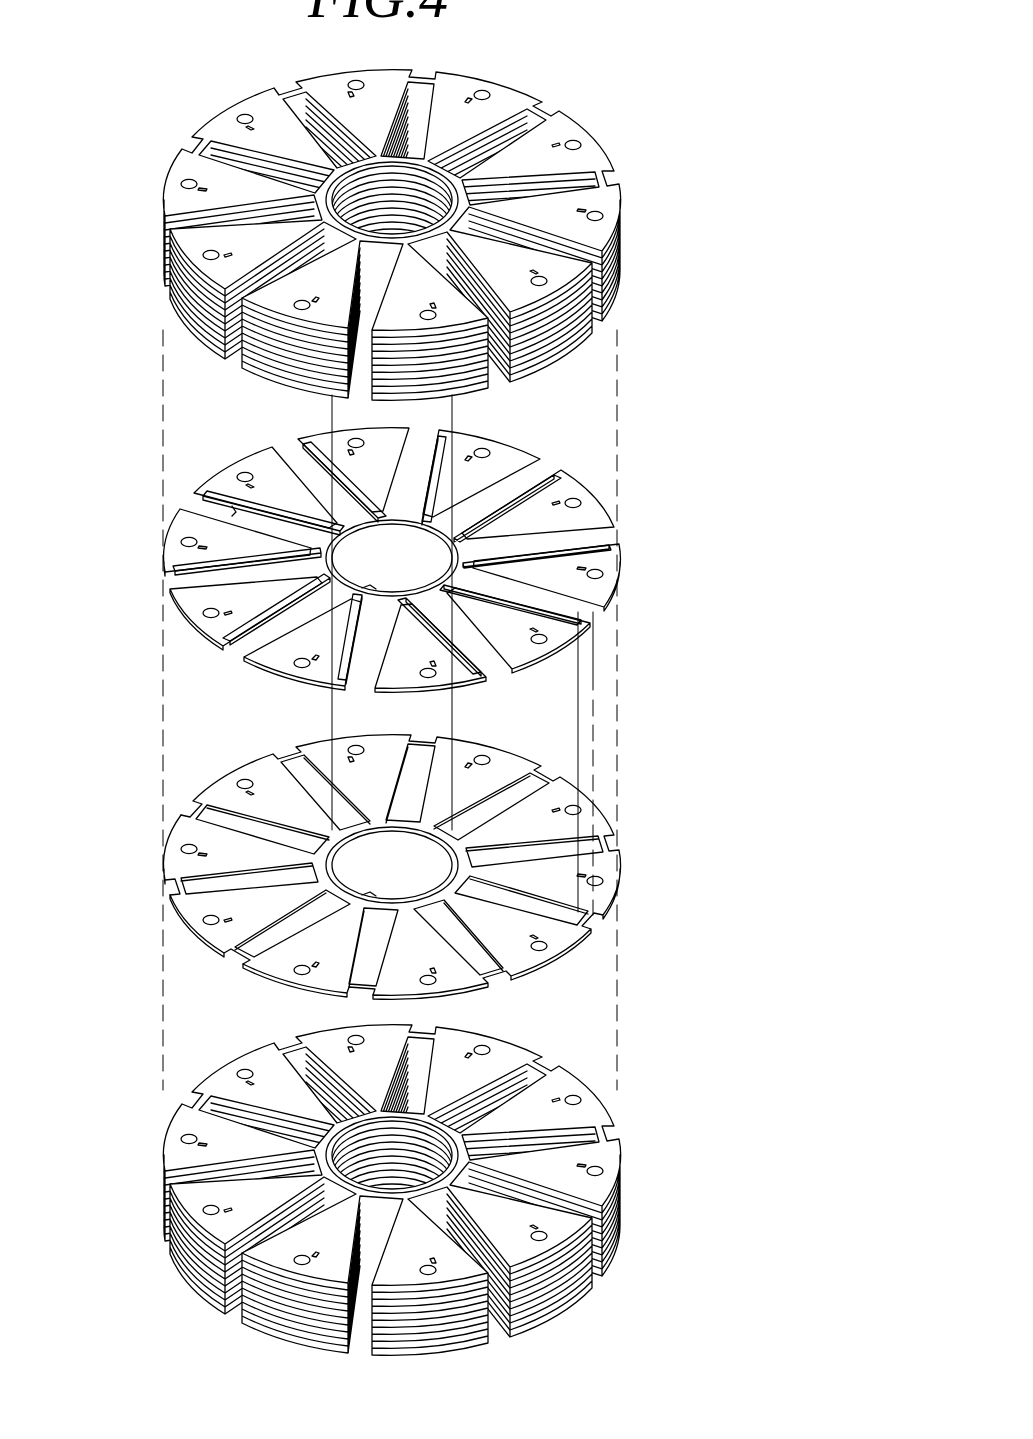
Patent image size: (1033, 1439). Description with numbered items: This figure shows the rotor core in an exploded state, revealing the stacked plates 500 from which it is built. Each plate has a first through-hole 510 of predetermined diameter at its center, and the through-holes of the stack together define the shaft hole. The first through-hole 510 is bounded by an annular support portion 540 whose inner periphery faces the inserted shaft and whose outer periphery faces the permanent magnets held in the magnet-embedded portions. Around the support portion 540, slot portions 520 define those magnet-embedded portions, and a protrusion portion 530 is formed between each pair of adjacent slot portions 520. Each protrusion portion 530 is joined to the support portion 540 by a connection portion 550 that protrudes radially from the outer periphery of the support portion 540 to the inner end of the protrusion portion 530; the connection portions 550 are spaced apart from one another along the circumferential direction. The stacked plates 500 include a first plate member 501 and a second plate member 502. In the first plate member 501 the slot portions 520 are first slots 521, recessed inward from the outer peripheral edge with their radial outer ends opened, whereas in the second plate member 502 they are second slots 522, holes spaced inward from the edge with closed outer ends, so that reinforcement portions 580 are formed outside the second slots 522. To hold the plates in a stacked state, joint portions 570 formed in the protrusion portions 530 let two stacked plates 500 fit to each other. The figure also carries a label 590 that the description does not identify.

The stacked plates 500 is at (725, 770).
The first plate member 501 is at (603, 500).
The second plate member 502 is at (602, 807).
The first through-holes 510 is at (392, 560).
The slot portions 520 is at (102, 610).
The first slots 521 is at (257, 638).
The second slots 522 is at (222, 820).
The protrusion portion 530 is at (197, 555).
The support portions 540 is at (347, 520).
The connection portions 550 is at (237, 507).
The joint portions 570 is at (181, 525).
The reinforcement portions 580 is at (243, 960).
The fixing hole 590 is at (248, 472).